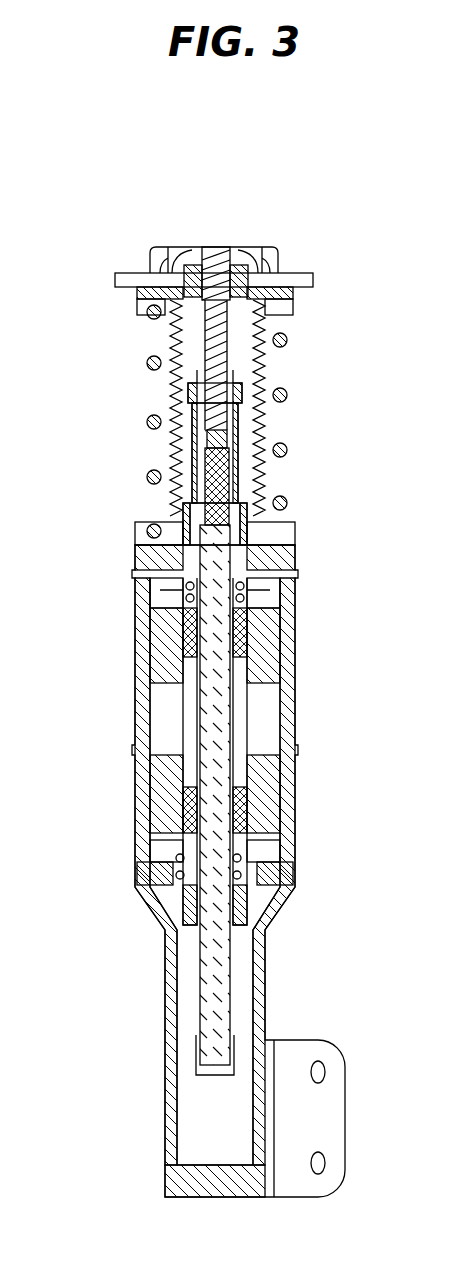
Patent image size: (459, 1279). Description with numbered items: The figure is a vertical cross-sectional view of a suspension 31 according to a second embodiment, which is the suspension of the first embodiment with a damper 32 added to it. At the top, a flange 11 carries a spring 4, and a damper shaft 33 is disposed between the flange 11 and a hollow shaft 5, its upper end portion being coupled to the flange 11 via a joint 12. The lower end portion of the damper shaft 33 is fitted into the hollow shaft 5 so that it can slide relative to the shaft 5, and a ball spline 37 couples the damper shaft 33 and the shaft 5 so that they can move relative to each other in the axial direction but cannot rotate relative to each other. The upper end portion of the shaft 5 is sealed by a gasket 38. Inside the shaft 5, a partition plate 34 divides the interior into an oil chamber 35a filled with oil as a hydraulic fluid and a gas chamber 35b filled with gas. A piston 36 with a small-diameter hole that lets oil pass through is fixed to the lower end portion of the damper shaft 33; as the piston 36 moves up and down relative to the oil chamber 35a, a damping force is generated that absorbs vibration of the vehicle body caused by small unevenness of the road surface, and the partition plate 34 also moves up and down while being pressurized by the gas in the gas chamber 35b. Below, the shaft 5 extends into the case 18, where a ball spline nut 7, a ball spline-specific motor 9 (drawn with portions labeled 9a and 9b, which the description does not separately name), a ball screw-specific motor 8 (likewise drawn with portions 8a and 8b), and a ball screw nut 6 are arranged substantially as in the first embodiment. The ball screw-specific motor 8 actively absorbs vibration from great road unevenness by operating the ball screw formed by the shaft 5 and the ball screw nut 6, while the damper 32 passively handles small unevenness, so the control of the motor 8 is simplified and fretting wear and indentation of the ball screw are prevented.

The suspension 31 is at (226, 128).
The flange 11 is at (272, 272).
The joint 12 is at (238, 266).
The damper shaft 33 is at (175, 340).
The spring 4 is at (288, 342).
The ball spline 37 is at (196, 374).
The gasket 38 is at (192, 397).
The damper 32 is at (190, 437).
The oil chamber 35a is at (196, 466).
The piston 36 is at (230, 442).
The shaft 5 is at (232, 496).
The partition plate 34 is at (150, 520).
The case 18 is at (296, 721).
The ball spline nut 7 is at (252, 596).
The gas chamber 35b is at (200, 596).
The ball spline-specific motor 9 is at (263, 645).
The upper bearing outer ring 9a is at (270, 635).
The upper bearing inner ring 9b is at (250, 650).
The ball screw-specific motor 8 is at (263, 794).
The lower bearing outer ring 8a is at (270, 775).
The lower bearing inner ring 8b is at (250, 792).
The ball screw nut 6 is at (250, 852).